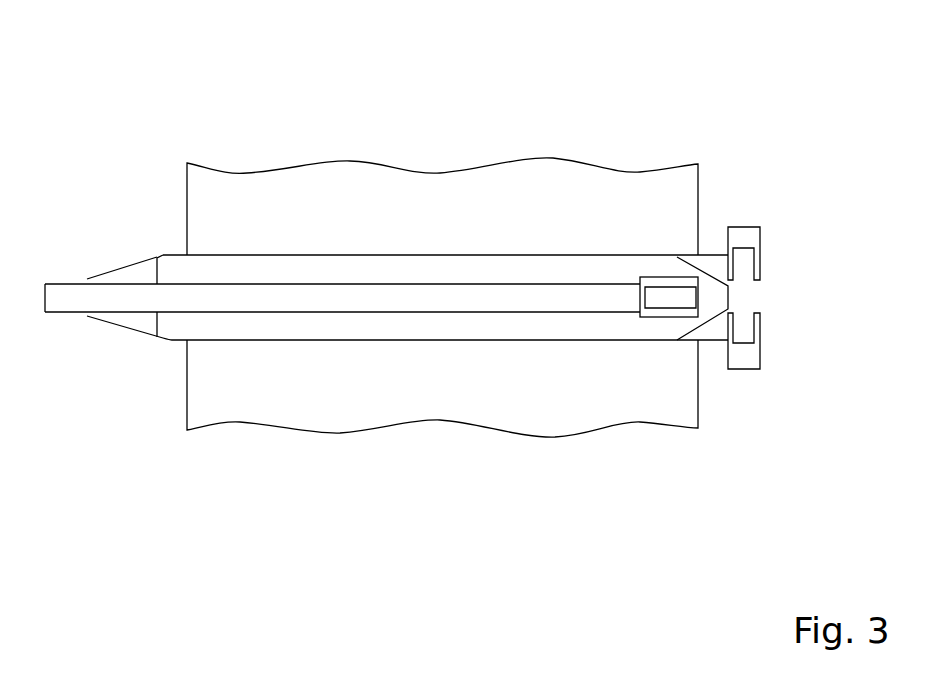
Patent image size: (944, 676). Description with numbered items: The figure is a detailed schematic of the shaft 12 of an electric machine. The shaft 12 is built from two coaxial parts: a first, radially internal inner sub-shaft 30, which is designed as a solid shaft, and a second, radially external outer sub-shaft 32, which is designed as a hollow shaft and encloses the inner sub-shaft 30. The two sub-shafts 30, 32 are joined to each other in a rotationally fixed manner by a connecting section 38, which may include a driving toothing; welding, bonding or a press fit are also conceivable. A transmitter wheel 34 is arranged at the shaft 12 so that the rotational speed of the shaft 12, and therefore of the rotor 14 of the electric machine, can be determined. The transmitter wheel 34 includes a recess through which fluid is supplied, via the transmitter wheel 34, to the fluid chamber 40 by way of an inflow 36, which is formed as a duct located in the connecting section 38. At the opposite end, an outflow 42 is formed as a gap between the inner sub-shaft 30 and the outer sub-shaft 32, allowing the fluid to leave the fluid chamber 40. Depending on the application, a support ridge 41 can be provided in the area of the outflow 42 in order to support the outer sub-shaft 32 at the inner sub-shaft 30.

The shaft 12 is at (110, 208).
The rotor 14 is at (698, 202).
The inner sub-shaft 30 is at (397, 312).
The outer sub-shaft 32 is at (240, 340).
The transmitter wheel 34 is at (760, 237).
The inflow 36 is at (712, 325).
The connecting section 38 is at (675, 318).
The fluid chamber 40 is at (542, 328).
The support ridge 41 is at (157, 323).
The outflow 42 is at (93, 335).